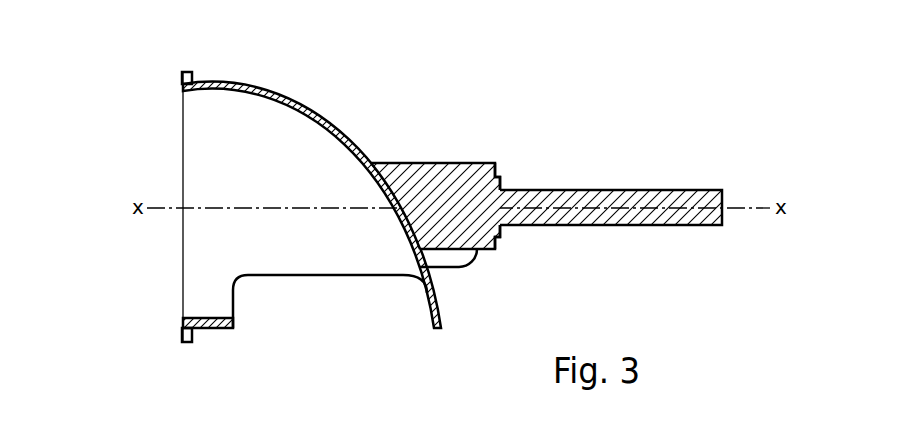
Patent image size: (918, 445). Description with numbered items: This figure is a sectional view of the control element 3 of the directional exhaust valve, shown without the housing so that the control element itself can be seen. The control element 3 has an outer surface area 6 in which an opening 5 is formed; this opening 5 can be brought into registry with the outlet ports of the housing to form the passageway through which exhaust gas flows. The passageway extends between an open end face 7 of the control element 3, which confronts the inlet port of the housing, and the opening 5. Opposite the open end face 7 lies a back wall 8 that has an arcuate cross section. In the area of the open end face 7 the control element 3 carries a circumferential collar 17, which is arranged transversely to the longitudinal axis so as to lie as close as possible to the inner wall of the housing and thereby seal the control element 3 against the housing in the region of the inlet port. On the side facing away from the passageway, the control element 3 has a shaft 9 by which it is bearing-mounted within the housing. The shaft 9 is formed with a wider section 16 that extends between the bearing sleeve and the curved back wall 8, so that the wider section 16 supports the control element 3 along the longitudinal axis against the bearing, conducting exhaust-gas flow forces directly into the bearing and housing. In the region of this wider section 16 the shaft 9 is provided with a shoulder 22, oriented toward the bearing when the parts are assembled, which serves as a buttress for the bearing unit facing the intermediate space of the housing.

The control element 3 is at (382, 192).
The opening 5 is at (337, 290).
The outer surface area 6 is at (212, 257).
The open end face 7 is at (202, 133).
The back wall 8 is at (327, 137).
The shaft 9 is at (673, 227).
The wider section 16 is at (467, 192).
The circumferential collar 17 is at (182, 80).
The shoulder 22 is at (507, 173).